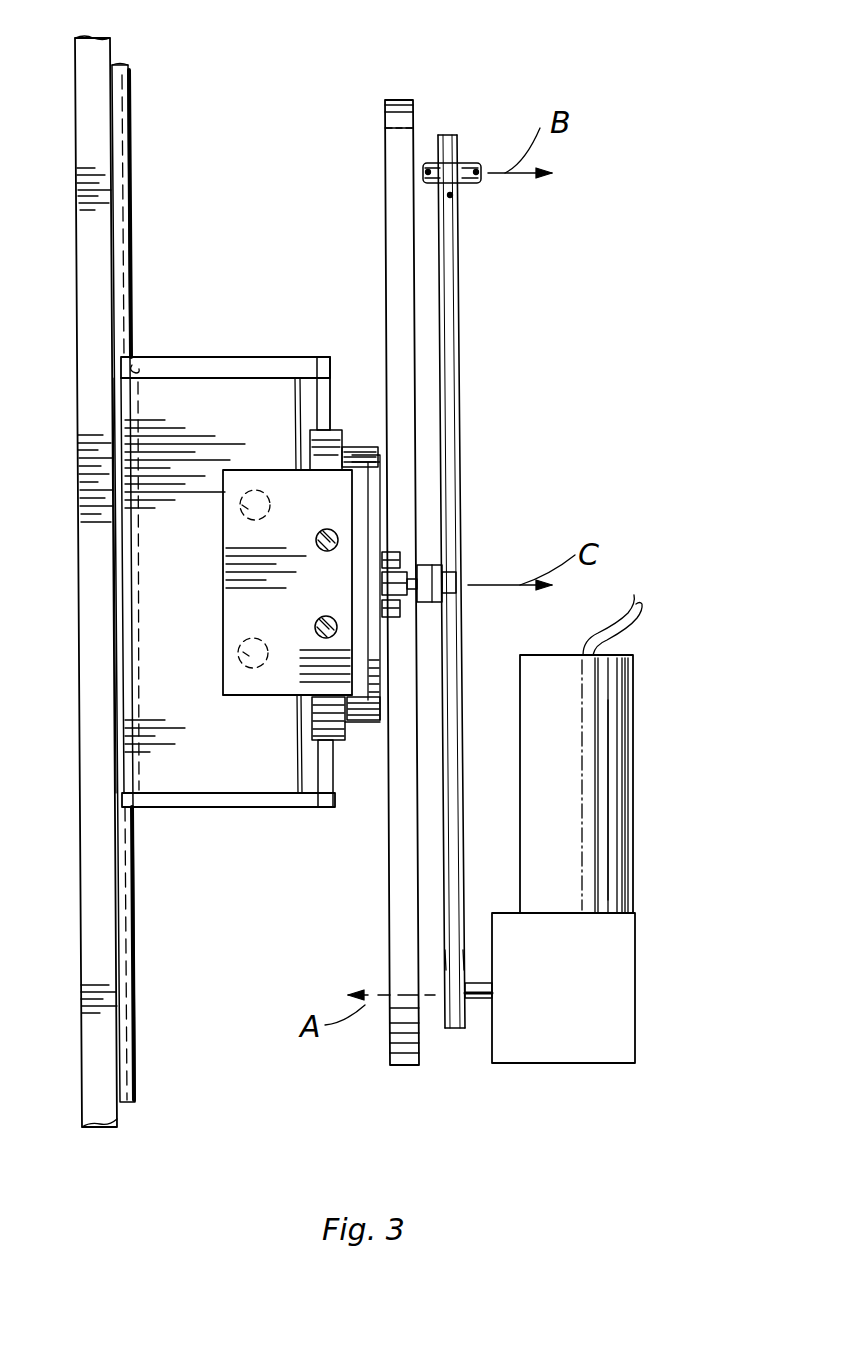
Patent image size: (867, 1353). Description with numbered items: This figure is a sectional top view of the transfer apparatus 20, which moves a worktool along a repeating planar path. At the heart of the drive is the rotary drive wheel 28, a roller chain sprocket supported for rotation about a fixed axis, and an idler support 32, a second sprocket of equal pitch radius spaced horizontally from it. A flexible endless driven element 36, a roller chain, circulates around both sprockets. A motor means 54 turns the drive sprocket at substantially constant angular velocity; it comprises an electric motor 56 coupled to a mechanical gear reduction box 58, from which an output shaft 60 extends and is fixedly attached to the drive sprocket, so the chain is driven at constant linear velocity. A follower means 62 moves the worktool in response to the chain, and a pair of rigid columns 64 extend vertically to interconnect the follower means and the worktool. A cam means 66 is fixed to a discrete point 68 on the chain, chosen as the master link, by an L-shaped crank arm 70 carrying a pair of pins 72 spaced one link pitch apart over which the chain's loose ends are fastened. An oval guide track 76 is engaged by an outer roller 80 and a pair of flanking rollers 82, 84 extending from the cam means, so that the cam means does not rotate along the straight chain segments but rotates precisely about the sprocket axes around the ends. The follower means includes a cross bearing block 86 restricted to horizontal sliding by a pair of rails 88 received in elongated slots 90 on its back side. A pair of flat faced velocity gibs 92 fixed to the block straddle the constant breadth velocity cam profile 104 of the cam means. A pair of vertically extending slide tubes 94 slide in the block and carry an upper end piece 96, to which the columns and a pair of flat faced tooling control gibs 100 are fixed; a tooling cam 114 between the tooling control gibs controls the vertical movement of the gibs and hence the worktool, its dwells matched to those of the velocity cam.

The transfer apparatus 20 is at (563, 353).
The rotary drive wheel 28 is at (452, 961).
The idler support 32 is at (452, 193).
The flexible endless driven element 36 is at (458, 285).
The motor means 54 is at (627, 668).
The electric motor 56 is at (617, 843).
The mechanical gear reduction box 58 is at (635, 993).
The output shaft 60 is at (480, 1002).
The follower means 62 is at (335, 350).
The rigid columns 64 is at (318, 616).
The cam means 66 is at (342, 432).
The discrete point 68 is at (460, 575).
The L-shaped crank arm 70 is at (420, 603).
The pins 72 is at (425, 597).
The oval guide track 76 is at (412, 95).
The outer roller 80 is at (402, 575).
The flanking roller 82 is at (395, 617).
The flanking roller 84 is at (390, 552).
The cross bearing block 86 is at (227, 357).
The rails 88 is at (129, 185).
The elongated slots 90 is at (138, 372).
The velocity gibs 92 is at (328, 357).
The slide tubes 94 is at (245, 507).
The upper end piece 96 is at (272, 698).
The tooling control gibs 100 is at (357, 717).
The velocity cam profile 104 is at (310, 445).
The tooling cam 114 is at (345, 728).